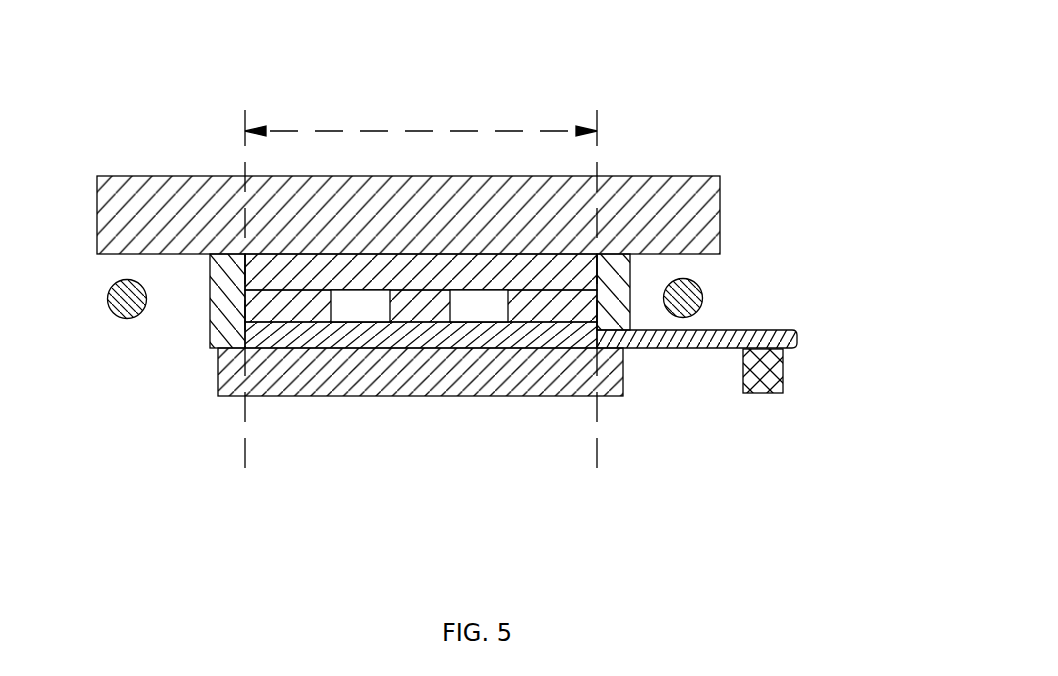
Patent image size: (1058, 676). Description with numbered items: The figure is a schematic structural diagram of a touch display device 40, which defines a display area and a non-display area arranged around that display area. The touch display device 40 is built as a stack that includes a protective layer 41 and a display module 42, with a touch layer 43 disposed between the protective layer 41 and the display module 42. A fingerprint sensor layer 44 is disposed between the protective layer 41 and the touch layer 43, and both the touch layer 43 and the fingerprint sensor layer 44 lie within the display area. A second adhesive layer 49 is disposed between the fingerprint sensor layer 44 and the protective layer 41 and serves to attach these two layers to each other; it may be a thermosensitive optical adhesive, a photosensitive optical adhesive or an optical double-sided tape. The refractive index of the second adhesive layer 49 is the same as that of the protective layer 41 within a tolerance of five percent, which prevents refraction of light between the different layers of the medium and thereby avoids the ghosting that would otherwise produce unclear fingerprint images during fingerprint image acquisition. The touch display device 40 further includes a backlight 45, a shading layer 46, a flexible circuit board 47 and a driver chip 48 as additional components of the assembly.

The touch display device 40 is at (473, 280).
The protective layer 41 is at (660, 240).
The display module 42 is at (560, 383).
The touch layer 43 is at (442, 340).
The fingerprint sensor layer 44 is at (300, 303).
The backlight 45 is at (115, 315).
The shading layer 46 is at (220, 313).
The flexible circuit board 47 is at (783, 328).
The driver chip 48 is at (783, 362).
The second adhesive layer 49 is at (280, 272).